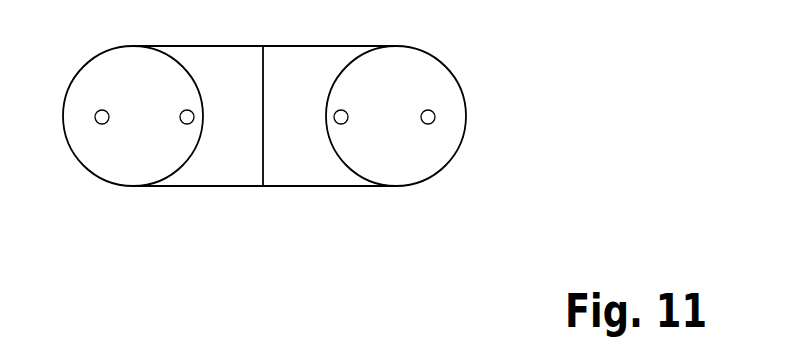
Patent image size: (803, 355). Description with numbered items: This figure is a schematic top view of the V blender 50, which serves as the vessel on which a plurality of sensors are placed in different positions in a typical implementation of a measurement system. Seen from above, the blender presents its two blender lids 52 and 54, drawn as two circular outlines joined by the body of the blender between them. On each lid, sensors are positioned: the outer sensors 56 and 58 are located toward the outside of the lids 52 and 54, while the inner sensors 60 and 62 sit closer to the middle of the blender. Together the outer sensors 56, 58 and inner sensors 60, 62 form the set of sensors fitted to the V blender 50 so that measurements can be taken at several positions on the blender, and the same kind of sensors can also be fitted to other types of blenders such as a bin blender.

The V blender 50 is at (330, 222).
The blender lid 52 is at (105, 167).
The blender lid 54 is at (442, 158).
The outer sensor 56 is at (98, 124).
The outer sensor 58 is at (428, 111).
The inner sensor 60 is at (194, 116).
The inner sensor 62 is at (337, 112).